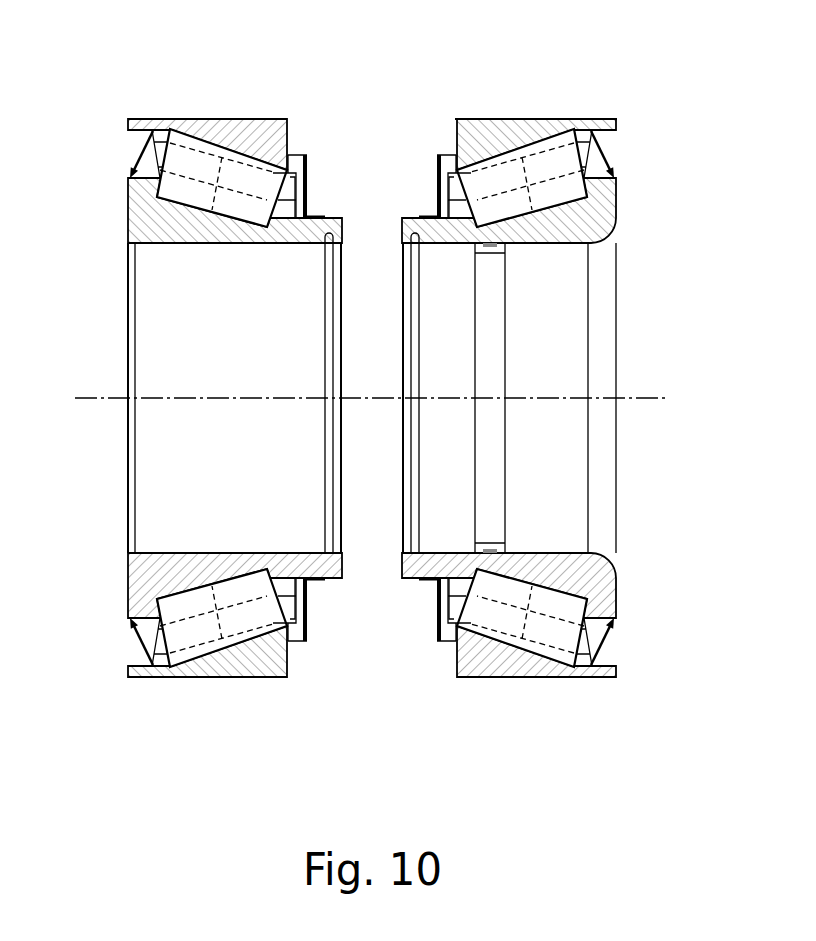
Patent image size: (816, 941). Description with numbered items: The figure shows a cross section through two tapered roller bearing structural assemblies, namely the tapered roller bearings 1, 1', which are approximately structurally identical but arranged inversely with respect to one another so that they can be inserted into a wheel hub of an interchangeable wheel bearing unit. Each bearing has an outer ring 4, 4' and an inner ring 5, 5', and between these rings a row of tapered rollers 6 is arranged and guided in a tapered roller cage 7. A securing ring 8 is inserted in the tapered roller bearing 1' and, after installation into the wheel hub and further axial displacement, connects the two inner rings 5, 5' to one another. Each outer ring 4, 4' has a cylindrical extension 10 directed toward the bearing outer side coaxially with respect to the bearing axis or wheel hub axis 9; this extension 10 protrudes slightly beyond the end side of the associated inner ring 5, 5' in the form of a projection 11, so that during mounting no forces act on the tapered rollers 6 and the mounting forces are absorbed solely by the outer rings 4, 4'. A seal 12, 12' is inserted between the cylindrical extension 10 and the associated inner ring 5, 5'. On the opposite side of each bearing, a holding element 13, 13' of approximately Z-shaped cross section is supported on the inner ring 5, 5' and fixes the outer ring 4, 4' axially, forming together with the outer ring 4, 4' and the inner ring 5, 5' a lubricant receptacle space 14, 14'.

The tapered roller bearing 1 is at (161, 398).
The tapered roller bearing 1' is at (591, 398).
The outer ring 4 is at (536, 355).
The outer ring 4' is at (207, 353).
The inner ring 5 is at (547, 398).
The inner ring 5' is at (195, 398).
The tapered rollers 6 is at (130, 150).
The tapered roller cage 7 is at (459, 188).
The securing ring 8 is at (495, 500).
The bearing axis or wheel hub axis 9 is at (652, 399).
The cylindrical extension 10 is at (587, 119).
The projection 11 is at (617, 123).
The seal 12 is at (650, 654).
The seal 12' is at (92, 655).
The holding element 13 is at (419, 648).
The holding element 13' is at (327, 648).
The lubricant receptacle space 14 is at (420, 137).
The lubricant receptacle space 14' is at (325, 137).